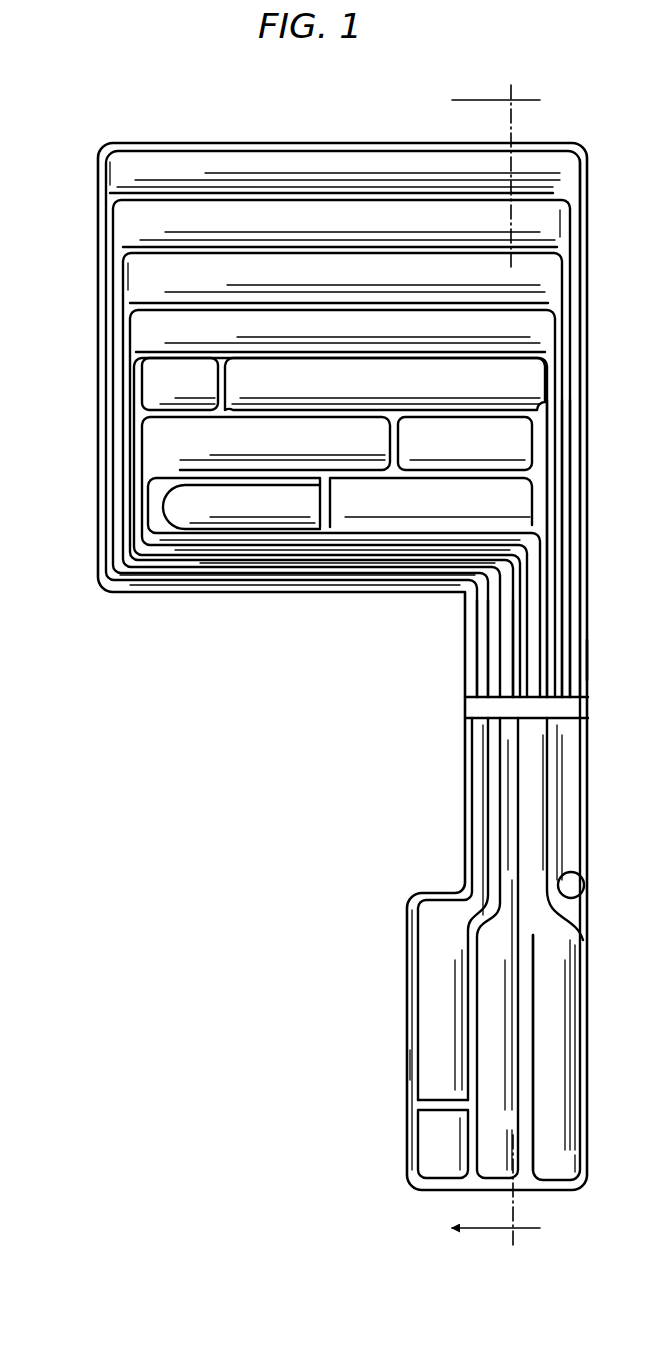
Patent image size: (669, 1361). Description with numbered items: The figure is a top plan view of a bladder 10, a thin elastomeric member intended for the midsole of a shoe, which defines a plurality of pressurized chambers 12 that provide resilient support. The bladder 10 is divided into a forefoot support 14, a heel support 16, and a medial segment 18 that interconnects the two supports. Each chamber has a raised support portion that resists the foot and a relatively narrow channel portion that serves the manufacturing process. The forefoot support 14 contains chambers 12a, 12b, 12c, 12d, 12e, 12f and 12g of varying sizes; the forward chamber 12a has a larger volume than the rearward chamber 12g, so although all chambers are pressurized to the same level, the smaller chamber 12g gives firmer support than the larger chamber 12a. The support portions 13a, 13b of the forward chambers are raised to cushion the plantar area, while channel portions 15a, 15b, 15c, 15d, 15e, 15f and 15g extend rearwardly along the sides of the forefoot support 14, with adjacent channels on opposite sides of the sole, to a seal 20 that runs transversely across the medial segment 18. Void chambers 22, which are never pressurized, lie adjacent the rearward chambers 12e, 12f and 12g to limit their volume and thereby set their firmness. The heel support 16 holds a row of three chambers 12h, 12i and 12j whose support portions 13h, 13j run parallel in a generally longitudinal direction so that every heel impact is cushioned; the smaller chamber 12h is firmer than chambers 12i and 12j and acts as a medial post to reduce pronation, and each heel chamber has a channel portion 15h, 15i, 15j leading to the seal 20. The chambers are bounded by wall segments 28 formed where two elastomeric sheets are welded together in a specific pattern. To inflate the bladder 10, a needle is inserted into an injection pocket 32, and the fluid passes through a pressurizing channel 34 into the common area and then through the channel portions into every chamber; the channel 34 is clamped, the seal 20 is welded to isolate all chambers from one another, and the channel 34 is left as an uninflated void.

The bladder 10 is at (320, 770).
The chambers 12 is at (570, 1045).
The chamber 12a is at (325, 163).
The chamber 12b is at (150, 217).
The chamber 12c is at (150, 283).
The chamber 12d is at (530, 328).
The chamber 12e is at (520, 383).
The chamber 12f is at (175, 445).
The chamber 12g is at (372, 500).
The chamber 12h is at (435, 975).
The chamber 12i is at (495, 1025).
The chamber 12j is at (565, 1120).
The support portion 13a is at (180, 163).
The support portion 13b is at (388, 210).
The support portion 13h is at (430, 1010).
The support portion 13j is at (572, 1165).
The forefoot support 14 is at (592, 190).
The channel portion 15a is at (578, 270).
The channel portion 15b is at (470, 690).
The channel portion 15c is at (572, 527).
The channel portion 15d is at (492, 660).
The channel portion 15e is at (562, 566).
The channel portion 15f is at (507, 620).
The channel portion 15g is at (540, 612).
The channel portion 15h is at (480, 810).
The channel portion 15i is at (508, 858).
The channel portion 15j is at (545, 850).
The heel support 16 is at (405, 1065).
The medial segment 18 is at (592, 660).
The seal 20 is at (580, 700).
The void chambers 22 is at (162, 392).
The wall segments 28 is at (265, 197).
The injection pocket 32 is at (586, 884).
The pressurizing channel 34 is at (578, 775).